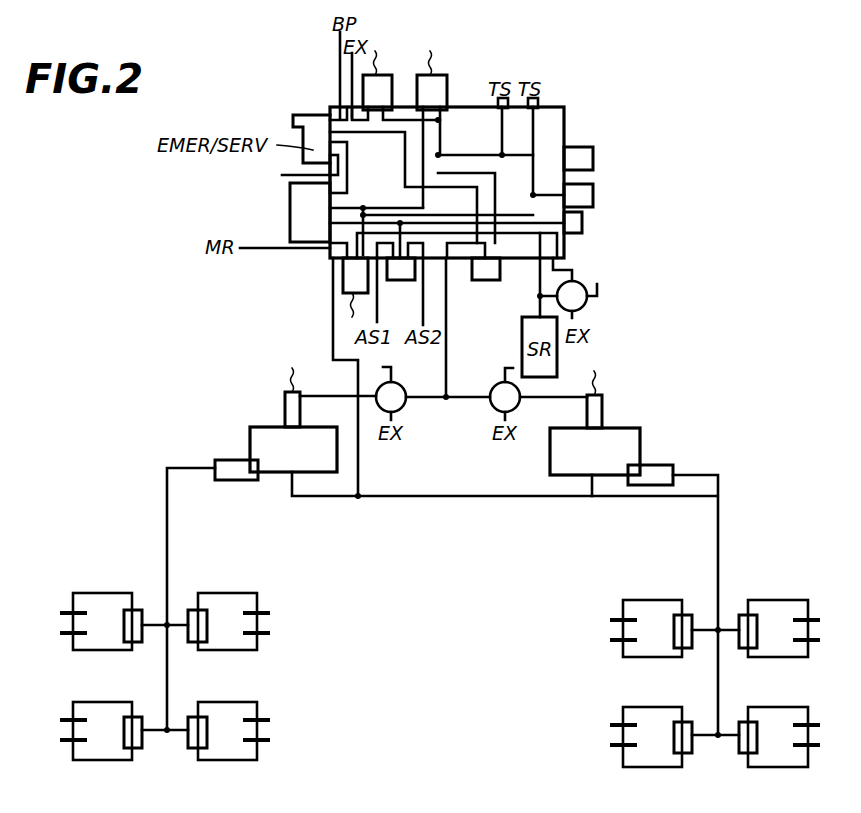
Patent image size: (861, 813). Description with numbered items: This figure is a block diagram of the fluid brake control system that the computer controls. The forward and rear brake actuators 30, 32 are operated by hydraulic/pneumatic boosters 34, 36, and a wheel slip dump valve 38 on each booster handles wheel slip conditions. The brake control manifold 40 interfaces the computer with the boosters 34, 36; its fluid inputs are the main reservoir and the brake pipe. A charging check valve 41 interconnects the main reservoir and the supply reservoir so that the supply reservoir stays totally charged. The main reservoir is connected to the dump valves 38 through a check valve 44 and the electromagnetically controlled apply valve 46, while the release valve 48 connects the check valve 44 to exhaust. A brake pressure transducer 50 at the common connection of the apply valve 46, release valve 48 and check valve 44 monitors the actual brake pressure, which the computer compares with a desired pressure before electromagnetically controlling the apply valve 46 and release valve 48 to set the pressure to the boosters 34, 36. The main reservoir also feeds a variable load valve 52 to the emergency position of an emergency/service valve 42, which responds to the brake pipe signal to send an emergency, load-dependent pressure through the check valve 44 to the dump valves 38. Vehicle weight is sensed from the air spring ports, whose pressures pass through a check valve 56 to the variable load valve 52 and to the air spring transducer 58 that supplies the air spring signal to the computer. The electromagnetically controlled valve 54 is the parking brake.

The forward brake actuators 30 is at (190, 615).
The rear brake actuators 32 is at (742, 620).
The hydraulic/pneumatic booster 34 is at (257, 440).
The hydraulic/pneumatic booster 36 is at (633, 440).
The wheel slip dump valve 38 is at (630, 372).
The brake control manifold 40 is at (564, 109).
The charging check valve 41 is at (582, 224).
The emergency/service valve 42 is at (313, 120).
The check valve 44 is at (490, 280).
The apply valve 46 is at (437, 85).
The release valve 48 is at (387, 80).
The brake pressure transducer 50 is at (593, 155).
The variable load valve 52 is at (290, 218).
The parking brake valve 54 is at (343, 292).
The check valve 56 is at (397, 280).
The air spring transducer 58 is at (593, 195).